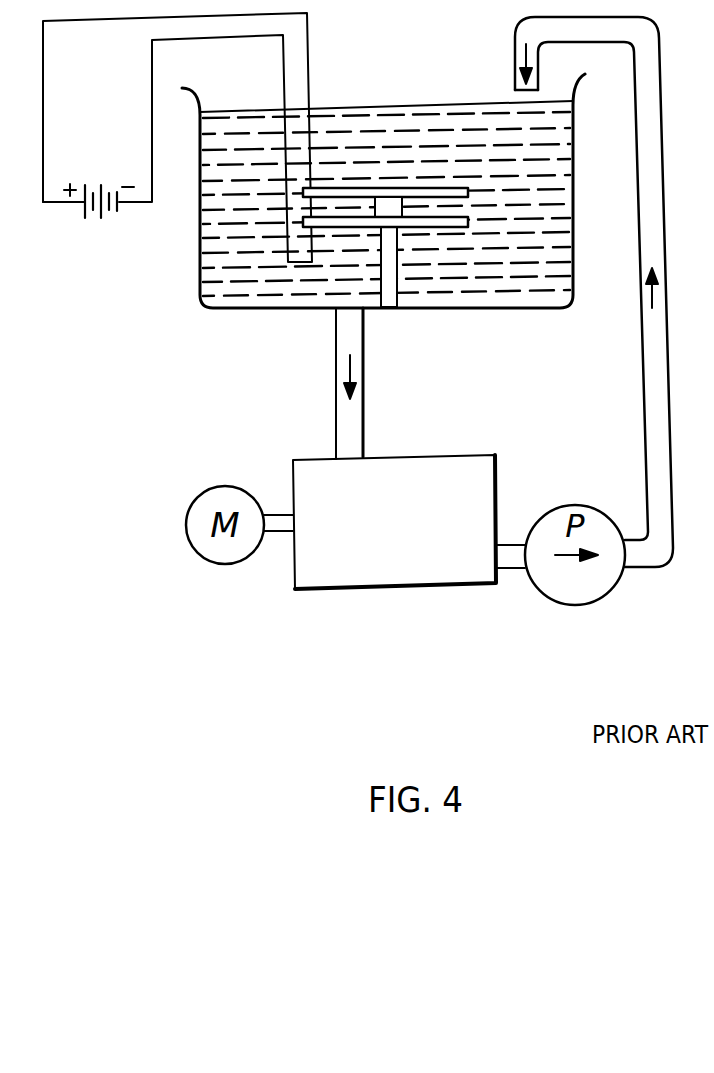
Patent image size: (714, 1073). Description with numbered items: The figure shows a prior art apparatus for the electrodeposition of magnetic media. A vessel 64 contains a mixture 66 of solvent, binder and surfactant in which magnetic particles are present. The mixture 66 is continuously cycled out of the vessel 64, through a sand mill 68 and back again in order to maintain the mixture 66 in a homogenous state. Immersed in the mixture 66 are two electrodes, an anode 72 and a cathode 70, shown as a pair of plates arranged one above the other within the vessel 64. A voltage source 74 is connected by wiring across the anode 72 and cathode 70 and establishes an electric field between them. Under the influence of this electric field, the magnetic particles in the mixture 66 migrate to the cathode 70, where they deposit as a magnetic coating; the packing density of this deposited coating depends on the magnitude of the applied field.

The vessel 64 is at (200, 300).
The mixture 66 is at (432, 135).
The sand mill 68 is at (360, 590).
The cathode 70 is at (337, 230).
The anode 72 is at (343, 188).
The voltage source 74 is at (108, 218).